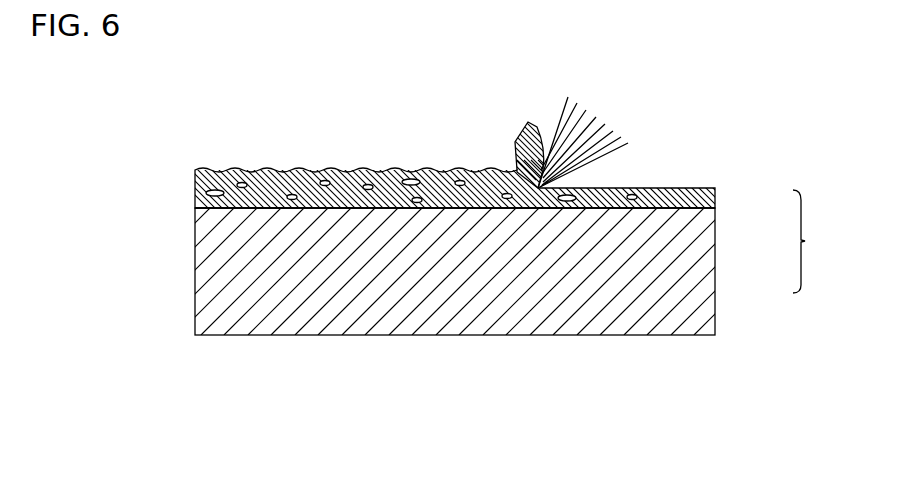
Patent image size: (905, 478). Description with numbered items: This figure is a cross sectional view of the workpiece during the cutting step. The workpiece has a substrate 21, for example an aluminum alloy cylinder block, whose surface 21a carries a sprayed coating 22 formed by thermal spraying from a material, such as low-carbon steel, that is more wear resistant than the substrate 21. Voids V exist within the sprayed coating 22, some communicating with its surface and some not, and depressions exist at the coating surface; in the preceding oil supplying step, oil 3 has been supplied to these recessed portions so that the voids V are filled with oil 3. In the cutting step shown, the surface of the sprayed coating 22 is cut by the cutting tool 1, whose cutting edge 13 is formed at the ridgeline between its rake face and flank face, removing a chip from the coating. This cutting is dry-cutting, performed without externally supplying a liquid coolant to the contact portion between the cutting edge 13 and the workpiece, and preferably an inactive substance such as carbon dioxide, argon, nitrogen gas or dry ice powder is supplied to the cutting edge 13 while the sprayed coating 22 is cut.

The cutting tool 1 is at (607, 131).
The cutting edge 13 is at (520, 153).
The oil 3 is at (300, 169).
The voids V is at (385, 170).
The substrate 21 is at (705, 286).
The surface 21a is at (203, 181).
The sprayed coating 22 is at (715, 193).